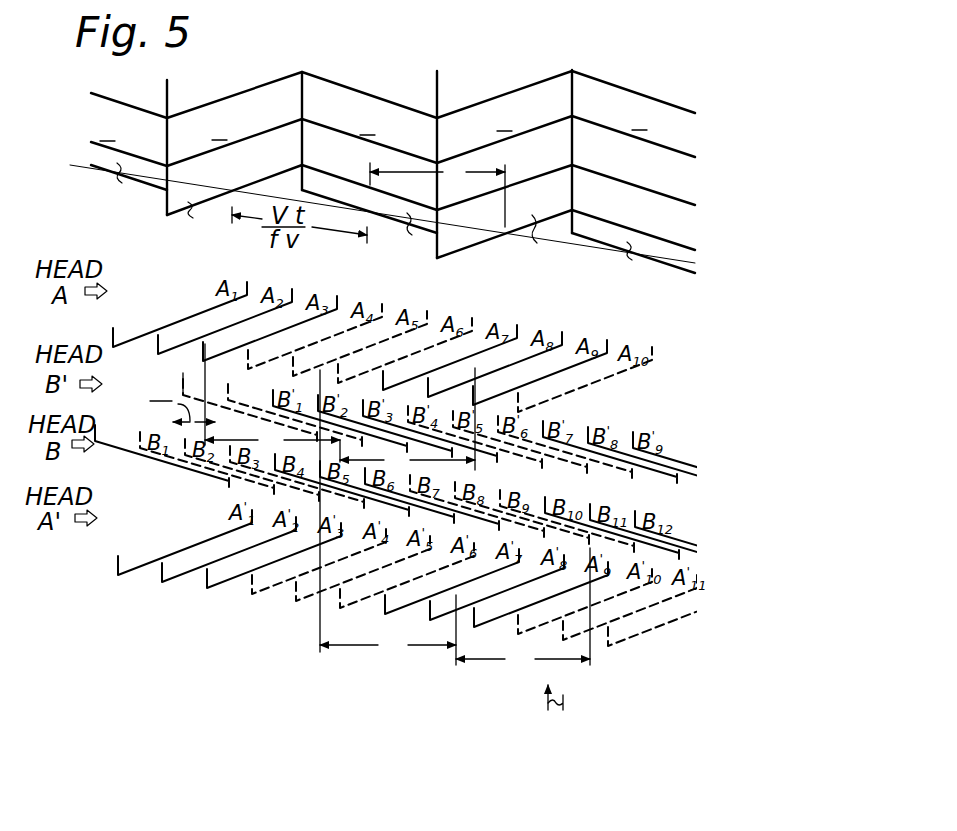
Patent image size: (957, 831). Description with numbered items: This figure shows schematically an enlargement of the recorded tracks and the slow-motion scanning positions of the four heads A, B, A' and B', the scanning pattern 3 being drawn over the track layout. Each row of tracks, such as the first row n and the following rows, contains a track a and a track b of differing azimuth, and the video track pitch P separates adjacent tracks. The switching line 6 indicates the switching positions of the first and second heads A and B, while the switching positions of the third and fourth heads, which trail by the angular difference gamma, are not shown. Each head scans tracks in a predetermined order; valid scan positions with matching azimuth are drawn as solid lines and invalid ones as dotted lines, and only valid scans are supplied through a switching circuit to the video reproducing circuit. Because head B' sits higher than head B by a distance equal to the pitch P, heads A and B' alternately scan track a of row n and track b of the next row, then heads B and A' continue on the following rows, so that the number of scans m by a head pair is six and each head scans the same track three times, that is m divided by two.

The magnetic tape 3 is at (415, 66).
The line 6–6' 6 is at (84, 166).
The track a is at (362, 125).
The track b is at (373, 125).
The first row n is at (378, 224).
The video track pitch P is at (397, 416).
The number of scans m is at (182, 398).